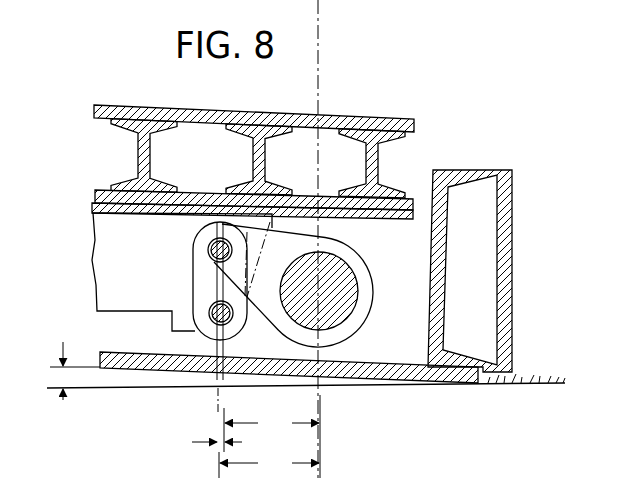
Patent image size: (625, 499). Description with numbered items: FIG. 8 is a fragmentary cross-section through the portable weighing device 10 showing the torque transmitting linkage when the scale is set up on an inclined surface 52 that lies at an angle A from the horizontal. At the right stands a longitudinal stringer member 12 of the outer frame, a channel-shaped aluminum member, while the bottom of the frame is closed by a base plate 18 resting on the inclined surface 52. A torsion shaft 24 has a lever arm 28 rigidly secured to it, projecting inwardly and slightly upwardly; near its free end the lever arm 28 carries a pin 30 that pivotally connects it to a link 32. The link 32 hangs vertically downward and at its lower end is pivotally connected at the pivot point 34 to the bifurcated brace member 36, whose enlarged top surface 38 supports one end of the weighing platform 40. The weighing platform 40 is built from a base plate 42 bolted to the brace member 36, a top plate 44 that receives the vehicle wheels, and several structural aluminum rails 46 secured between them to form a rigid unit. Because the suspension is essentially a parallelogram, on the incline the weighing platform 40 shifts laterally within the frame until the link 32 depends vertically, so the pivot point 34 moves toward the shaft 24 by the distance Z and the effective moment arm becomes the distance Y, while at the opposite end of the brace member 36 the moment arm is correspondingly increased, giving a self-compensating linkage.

The portable weighing device 10 is at (434, 119).
The longitudinal stringer member 12 is at (508, 258).
The base plate 18 is at (378, 384).
The shaft 24 is at (352, 295).
The lever arm 28 is at (362, 256).
The pin 30 is at (206, 248).
The link 32 is at (196, 285).
The pivot point 34 is at (240, 320).
The bifurcated brace member 36 is at (122, 312).
The enlarged top surface 38 is at (92, 208).
The weighing platform 40 is at (377, 117).
The base plate of weighing platform 42 is at (98, 192).
The top plate 44 is at (250, 111).
The structural aluminum rail 46 is at (151, 150).
The inclined surface 52 is at (545, 380).